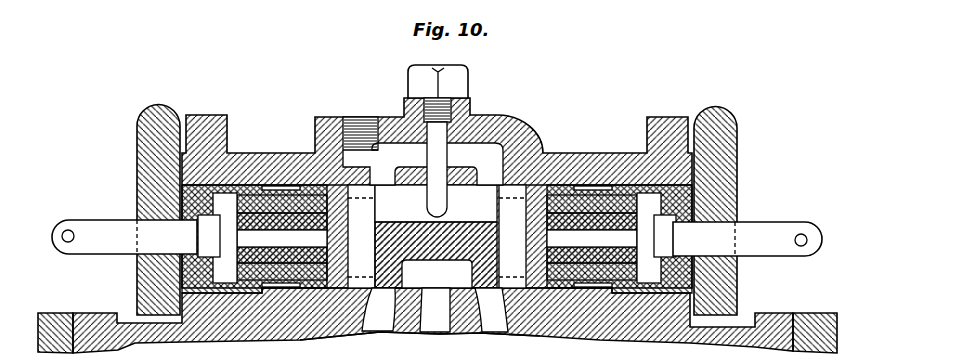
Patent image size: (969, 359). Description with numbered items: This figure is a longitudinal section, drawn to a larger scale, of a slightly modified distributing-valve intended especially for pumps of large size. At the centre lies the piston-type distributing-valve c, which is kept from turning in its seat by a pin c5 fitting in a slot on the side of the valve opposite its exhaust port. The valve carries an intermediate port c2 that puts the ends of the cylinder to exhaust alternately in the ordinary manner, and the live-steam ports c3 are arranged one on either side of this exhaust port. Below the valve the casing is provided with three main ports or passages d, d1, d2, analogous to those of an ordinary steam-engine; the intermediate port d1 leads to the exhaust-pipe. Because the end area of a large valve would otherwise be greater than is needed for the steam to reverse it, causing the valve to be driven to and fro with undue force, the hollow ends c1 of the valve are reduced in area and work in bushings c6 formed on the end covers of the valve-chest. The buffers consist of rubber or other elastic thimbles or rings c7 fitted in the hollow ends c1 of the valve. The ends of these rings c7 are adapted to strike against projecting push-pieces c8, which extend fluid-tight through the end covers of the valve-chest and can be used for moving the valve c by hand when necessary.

The distributing-valve c is at (436, 255).
The hollow ends of the valve c1 is at (437, 239).
The intermediate port c2 is at (437, 274).
The live-steam ports c3 is at (437, 236).
The pin c5 is at (438, 141).
The bushings c6 is at (243, 214).
The elastic thimbles or rings c7 is at (266, 212).
The push-pieces c8 is at (437, 238).
The main port d is at (378, 309).
The intermediate port d1 is at (435, 310).
The main port d2 is at (491, 310).